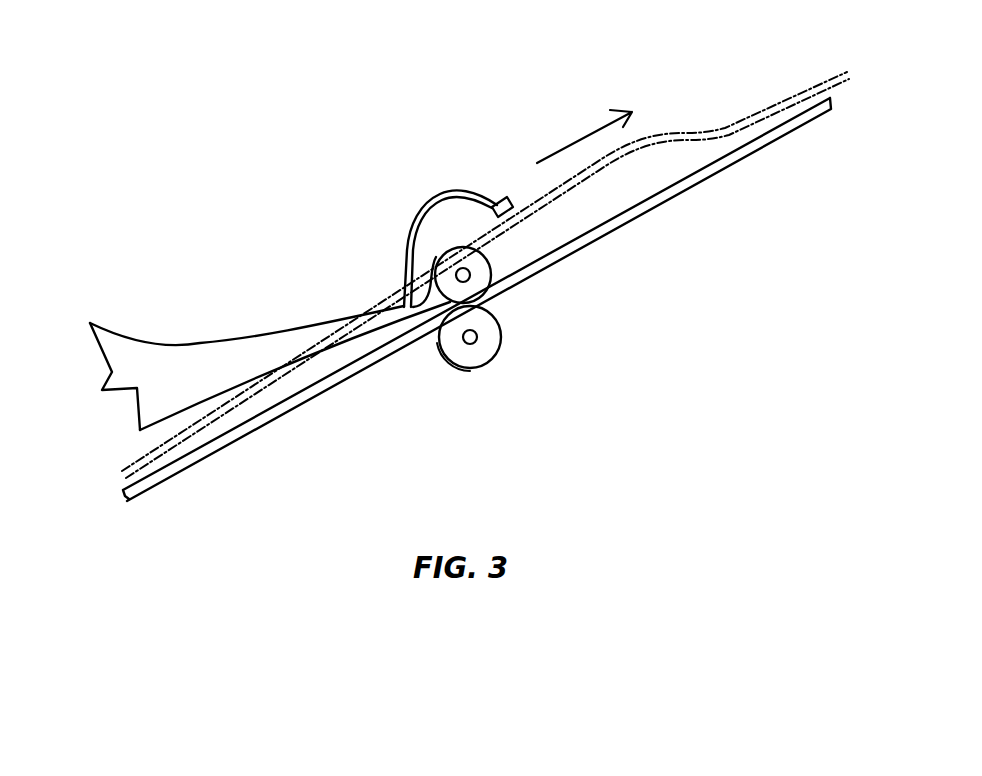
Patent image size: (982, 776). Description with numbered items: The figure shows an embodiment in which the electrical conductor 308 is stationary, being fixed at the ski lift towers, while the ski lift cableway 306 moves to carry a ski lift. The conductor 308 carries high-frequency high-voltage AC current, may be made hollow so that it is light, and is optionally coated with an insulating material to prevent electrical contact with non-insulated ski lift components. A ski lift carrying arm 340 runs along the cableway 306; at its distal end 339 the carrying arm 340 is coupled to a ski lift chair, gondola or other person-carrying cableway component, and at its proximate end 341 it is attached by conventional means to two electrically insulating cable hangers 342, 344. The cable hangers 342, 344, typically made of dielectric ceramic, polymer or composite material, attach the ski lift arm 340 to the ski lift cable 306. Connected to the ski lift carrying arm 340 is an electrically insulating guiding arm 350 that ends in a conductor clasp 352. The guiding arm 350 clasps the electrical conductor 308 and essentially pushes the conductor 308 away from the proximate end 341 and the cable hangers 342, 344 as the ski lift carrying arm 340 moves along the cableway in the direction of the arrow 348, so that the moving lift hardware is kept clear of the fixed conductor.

The ski lift cableway 306 is at (737, 160).
The electrical conductor 308 is at (767, 110).
The distal end 339 is at (104, 353).
The ski lift carrying arm 340 is at (202, 354).
The proximate end 341 is at (427, 310).
The cable hanger 342 is at (485, 350).
The cable hanger 344 is at (482, 272).
The arrow 348 is at (587, 130).
The guiding arm 350 is at (427, 198).
The conductor clasp 352 is at (507, 198).